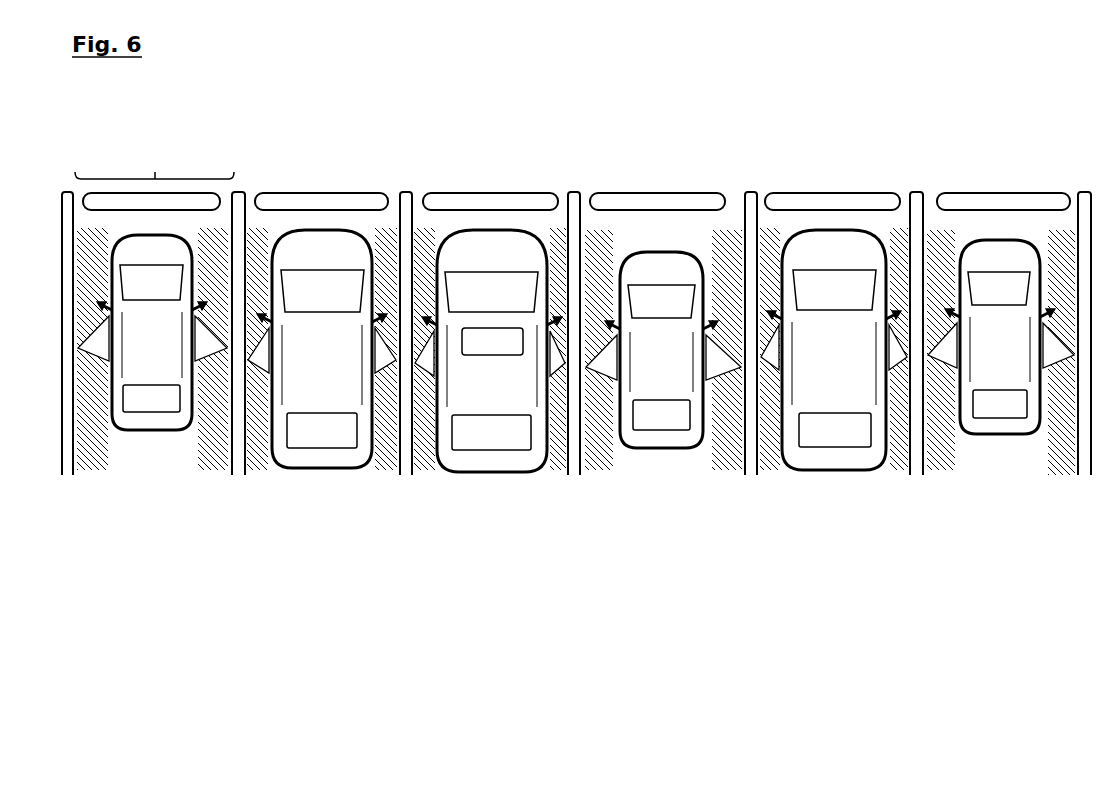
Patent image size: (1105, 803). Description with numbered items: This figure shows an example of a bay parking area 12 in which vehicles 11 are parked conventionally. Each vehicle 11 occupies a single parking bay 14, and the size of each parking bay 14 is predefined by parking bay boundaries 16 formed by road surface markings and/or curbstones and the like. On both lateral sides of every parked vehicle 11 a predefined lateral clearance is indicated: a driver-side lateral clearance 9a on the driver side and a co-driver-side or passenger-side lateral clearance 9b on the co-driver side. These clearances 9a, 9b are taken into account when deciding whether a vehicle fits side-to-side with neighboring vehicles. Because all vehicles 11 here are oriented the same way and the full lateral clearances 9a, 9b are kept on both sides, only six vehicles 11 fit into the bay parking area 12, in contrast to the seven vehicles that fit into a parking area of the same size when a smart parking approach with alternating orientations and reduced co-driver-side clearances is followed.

The driver-side lateral clearance 9a is at (88, 468).
The co-driver-side lateral clearance 9b is at (218, 468).
The parked vehicle 11 is at (135, 432).
The bay parking area 12 is at (240, 122).
The parking bay 14 is at (154, 160).
The parking bay boundary 16 is at (352, 193).